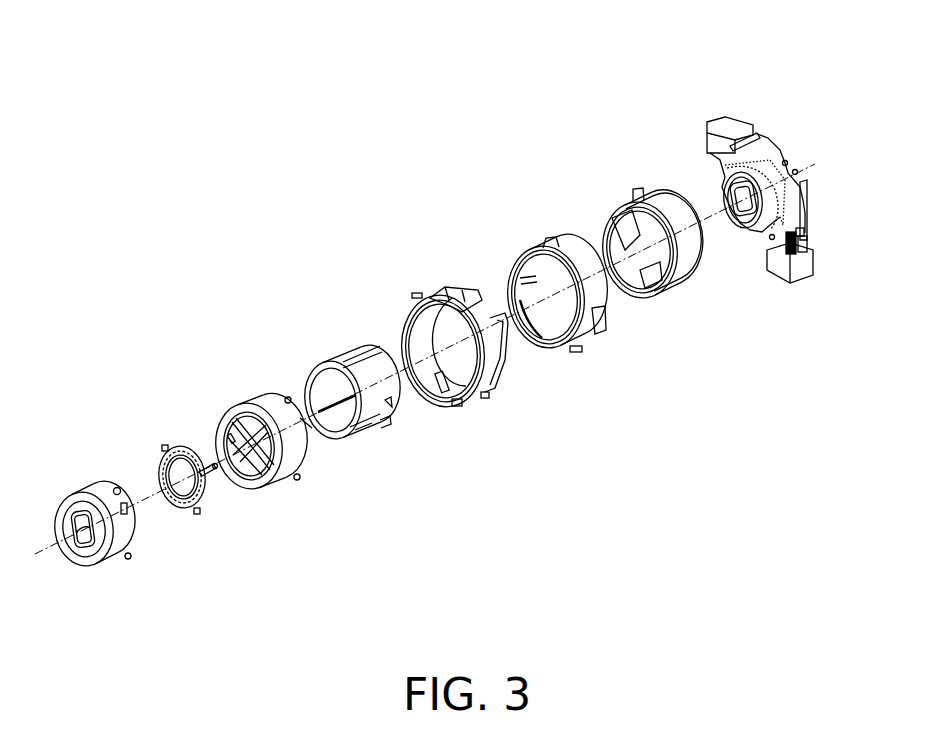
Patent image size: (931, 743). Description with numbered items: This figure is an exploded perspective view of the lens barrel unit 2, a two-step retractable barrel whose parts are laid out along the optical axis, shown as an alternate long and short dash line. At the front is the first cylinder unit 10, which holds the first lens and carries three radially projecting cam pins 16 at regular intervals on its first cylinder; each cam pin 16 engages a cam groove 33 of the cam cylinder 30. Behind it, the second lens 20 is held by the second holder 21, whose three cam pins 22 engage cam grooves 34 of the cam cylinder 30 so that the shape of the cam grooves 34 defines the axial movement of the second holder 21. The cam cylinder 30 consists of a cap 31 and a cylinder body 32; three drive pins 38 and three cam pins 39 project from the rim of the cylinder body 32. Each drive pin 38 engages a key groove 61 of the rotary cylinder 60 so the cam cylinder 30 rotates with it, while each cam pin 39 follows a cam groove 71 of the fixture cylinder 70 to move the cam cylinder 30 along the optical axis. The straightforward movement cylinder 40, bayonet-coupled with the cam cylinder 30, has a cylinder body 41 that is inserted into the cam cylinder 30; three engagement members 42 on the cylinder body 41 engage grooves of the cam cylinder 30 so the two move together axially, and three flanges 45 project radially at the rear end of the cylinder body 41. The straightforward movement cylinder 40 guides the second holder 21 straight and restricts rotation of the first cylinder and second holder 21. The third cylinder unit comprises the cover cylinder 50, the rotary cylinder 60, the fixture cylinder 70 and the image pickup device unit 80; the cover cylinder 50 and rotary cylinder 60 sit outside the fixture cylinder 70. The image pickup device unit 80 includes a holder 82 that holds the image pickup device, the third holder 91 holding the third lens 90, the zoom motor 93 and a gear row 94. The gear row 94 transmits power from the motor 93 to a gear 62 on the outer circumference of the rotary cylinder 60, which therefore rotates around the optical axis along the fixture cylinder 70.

The lens barrel unit 2 is at (279, 203).
The first cylinder unit 10 is at (53, 494).
The cam pin 16 is at (118, 488).
The second lens 20 is at (181, 490).
The second holder 21 is at (185, 446).
The cam pin 22 is at (164, 447).
The cam cylinder 30 is at (262, 385).
The cap 31 is at (268, 486).
The cylinder body 32 is at (264, 400).
The cam groove 33 is at (240, 480).
The cam groove 34 is at (235, 420).
The drive pin 38 is at (288, 397).
The cam pin 39 is at (312, 434).
The straightforward movement cylinder 40 is at (353, 356).
The cylinder body 41 is at (376, 430).
The engagement member 42 is at (392, 408).
The flange 45 is at (359, 360).
The cover cylinder 50 is at (440, 296).
The rotary cylinder 60 is at (550, 235).
The key groove 61 is at (514, 266).
The gear 62 is at (600, 334).
The fixture cylinder 70 is at (652, 190).
The cam groove 71 is at (603, 230).
The image pickup device unit 80 is at (673, 140).
The holder 82 is at (810, 216).
The third lens 90 is at (747, 229).
The third holder 91 is at (755, 224).
The motor 93 is at (778, 272).
The gear row 94 is at (815, 243).